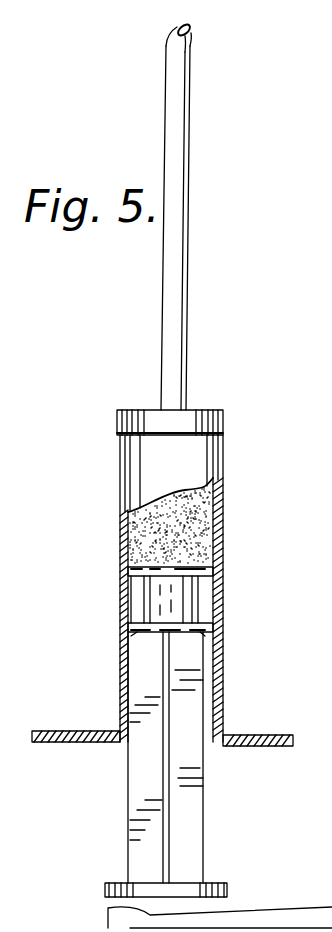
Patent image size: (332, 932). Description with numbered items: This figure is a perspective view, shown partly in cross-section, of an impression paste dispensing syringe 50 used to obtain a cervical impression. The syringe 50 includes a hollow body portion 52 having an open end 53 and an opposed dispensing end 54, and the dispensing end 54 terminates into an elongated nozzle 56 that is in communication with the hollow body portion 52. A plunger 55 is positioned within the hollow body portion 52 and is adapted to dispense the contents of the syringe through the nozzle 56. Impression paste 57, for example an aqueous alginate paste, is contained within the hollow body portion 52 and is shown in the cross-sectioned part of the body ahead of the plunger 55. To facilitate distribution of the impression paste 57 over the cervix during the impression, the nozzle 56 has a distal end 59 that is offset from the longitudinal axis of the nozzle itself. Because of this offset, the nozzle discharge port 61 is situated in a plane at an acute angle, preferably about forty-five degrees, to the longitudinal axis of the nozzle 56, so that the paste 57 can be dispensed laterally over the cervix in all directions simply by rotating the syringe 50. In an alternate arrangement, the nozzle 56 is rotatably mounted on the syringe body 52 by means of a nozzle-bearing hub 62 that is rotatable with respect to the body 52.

The syringe 50 is at (106, 569).
The hollow body portion 52 is at (120, 603).
The open end 53 is at (127, 744).
The dispensing end 54 is at (148, 455).
The plunger 55 is at (183, 597).
The elongated nozzle 56 is at (163, 311).
The impression paste 57 is at (190, 525).
The distal end 59 is at (170, 38).
The nozzle discharge port 61 is at (196, 32).
The nozzle-bearing hub 62 is at (206, 426).